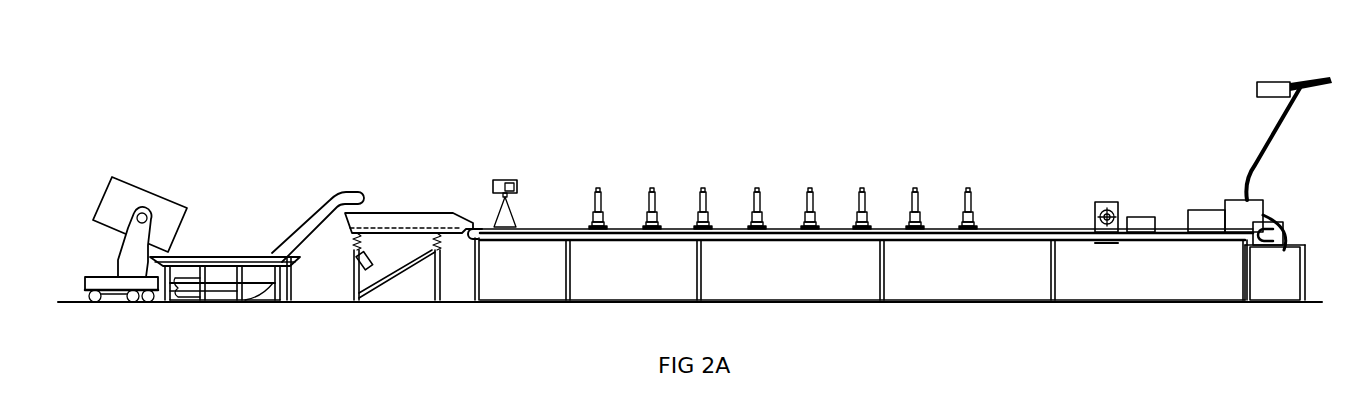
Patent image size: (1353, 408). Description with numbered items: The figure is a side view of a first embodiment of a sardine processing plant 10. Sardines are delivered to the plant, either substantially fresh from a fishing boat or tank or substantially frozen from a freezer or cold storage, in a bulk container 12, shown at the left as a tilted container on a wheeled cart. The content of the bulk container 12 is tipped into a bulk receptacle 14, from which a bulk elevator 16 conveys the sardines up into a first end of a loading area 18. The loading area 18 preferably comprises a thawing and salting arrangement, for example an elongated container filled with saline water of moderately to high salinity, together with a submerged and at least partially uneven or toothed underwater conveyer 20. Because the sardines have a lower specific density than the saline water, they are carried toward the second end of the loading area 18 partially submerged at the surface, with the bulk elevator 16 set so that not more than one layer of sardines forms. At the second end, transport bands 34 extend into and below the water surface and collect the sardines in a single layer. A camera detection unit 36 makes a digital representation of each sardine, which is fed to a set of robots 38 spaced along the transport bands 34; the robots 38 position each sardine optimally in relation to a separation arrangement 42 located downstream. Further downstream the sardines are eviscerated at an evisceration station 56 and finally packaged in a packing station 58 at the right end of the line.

The sardine processing plant 10 is at (119, 113).
The bulk container 12 is at (184, 203).
The bulk receptacle 14 is at (237, 253).
The bulk elevator 16 is at (350, 190).
The loading area 18 is at (362, 218).
The underwater conveyer 20 is at (430, 228).
The transport bands 34 is at (482, 228).
The camera detection unit 36 is at (513, 182).
The robots 38 is at (600, 190).
The separation arrangement 42 is at (1098, 202).
The evisceration station 56 is at (1133, 218).
The packing station 58 is at (1231, 170).